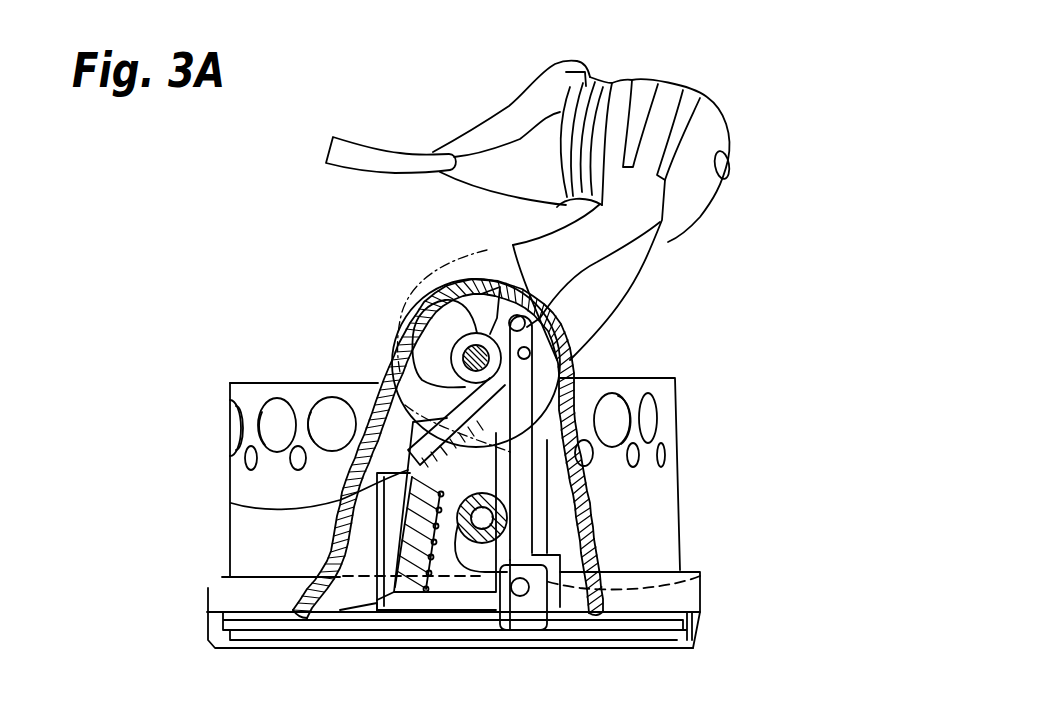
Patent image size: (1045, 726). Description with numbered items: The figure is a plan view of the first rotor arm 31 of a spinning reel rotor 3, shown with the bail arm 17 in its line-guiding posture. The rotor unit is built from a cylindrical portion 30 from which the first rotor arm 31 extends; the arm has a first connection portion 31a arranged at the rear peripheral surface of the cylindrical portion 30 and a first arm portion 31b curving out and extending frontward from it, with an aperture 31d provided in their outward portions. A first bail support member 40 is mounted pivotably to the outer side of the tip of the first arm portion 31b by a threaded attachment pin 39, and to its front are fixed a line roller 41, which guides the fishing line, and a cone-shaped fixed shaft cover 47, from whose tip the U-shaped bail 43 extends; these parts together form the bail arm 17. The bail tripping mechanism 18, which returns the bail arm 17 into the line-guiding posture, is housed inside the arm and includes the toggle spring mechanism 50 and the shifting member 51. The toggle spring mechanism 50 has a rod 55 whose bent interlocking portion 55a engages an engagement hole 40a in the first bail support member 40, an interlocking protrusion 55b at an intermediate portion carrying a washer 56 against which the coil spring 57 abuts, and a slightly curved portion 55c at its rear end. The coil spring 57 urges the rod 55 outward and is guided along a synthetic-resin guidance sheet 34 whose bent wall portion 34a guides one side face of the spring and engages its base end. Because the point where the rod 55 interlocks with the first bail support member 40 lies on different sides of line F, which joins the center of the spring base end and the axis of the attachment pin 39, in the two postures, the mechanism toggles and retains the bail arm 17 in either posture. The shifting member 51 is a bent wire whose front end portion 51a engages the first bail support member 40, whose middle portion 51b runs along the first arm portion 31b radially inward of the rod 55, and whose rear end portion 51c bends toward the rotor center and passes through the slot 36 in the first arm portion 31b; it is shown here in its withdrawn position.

The rotor 3 is at (241, 368).
The bail arm 17 is at (488, 106).
The bail tripping mechanism 18 is at (412, 598).
The cylindrical portion 30 is at (280, 395).
The first rotor arm 31 is at (324, 567).
The first connection portion 31a is at (230, 592).
The first arm portion 31b is at (360, 575).
The aperture 31d is at (231, 505).
The guidance sheet 34 is at (449, 598).
The wall portion 34a is at (395, 603).
The slot 36 is at (560, 633).
The attachment pin 39 is at (465, 333).
The first bail support member 40 is at (665, 250).
The engagement hole 40a is at (617, 270).
The line roller 41 is at (611, 84).
The bail 43 is at (363, 147).
The fixed shaft cover 47 is at (548, 83).
The toggle spring mechanism 50 is at (393, 368).
The shifting member 51 is at (533, 471).
The front end portion 51a is at (520, 316).
The middle portion 51b is at (520, 453).
The rear end portion 51c is at (700, 576).
The rod 55 is at (528, 585).
The interlocking portion 55a is at (550, 362).
The interlocking protrusion 55b is at (545, 380).
The slightly curved portion 55c is at (418, 502).
The washer 56 is at (675, 378).
The coil spring 57 is at (490, 560).
The line F is at (407, 297).